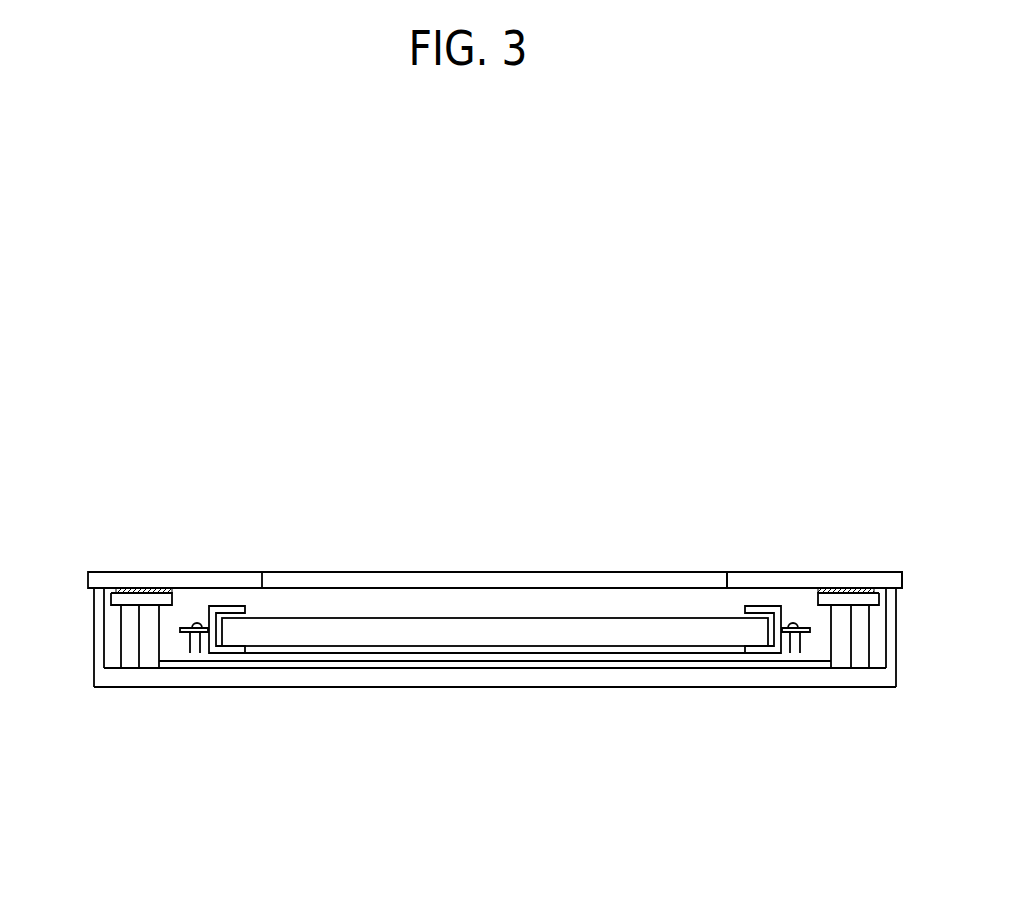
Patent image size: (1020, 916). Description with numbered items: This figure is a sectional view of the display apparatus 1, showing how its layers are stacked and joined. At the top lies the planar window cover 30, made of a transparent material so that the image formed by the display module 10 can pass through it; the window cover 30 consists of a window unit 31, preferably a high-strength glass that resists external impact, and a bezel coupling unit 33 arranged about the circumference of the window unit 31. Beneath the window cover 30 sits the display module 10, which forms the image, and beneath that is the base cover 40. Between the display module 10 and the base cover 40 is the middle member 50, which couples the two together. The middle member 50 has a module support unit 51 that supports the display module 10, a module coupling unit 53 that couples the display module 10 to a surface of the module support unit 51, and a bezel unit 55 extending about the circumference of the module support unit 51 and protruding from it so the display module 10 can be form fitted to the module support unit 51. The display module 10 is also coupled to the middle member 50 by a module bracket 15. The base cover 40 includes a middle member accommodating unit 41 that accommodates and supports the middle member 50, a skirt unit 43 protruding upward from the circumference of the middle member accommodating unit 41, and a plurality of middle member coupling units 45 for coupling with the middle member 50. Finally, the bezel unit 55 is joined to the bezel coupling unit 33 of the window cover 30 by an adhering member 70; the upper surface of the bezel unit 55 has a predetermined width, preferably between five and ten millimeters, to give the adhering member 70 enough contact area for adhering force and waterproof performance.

The display apparatus 1 is at (300, 382).
The display module 10 is at (492, 625).
The module bracket 15 is at (237, 604).
The window cover 30 is at (788, 488).
The window unit 31 is at (673, 571).
The bezel coupling unit 33 is at (792, 571).
The base cover 40 is at (177, 766).
The middle member accommodating unit 41 is at (178, 678).
The skirt unit 43 is at (94, 665).
The middle member coupling unit 45 is at (133, 660).
The middle member 50 is at (205, 488).
The module support unit 51 is at (175, 657).
The module coupling unit 53 is at (198, 624).
The bezel unit 55 is at (117, 590).
The adhering member 70 is at (846, 590).